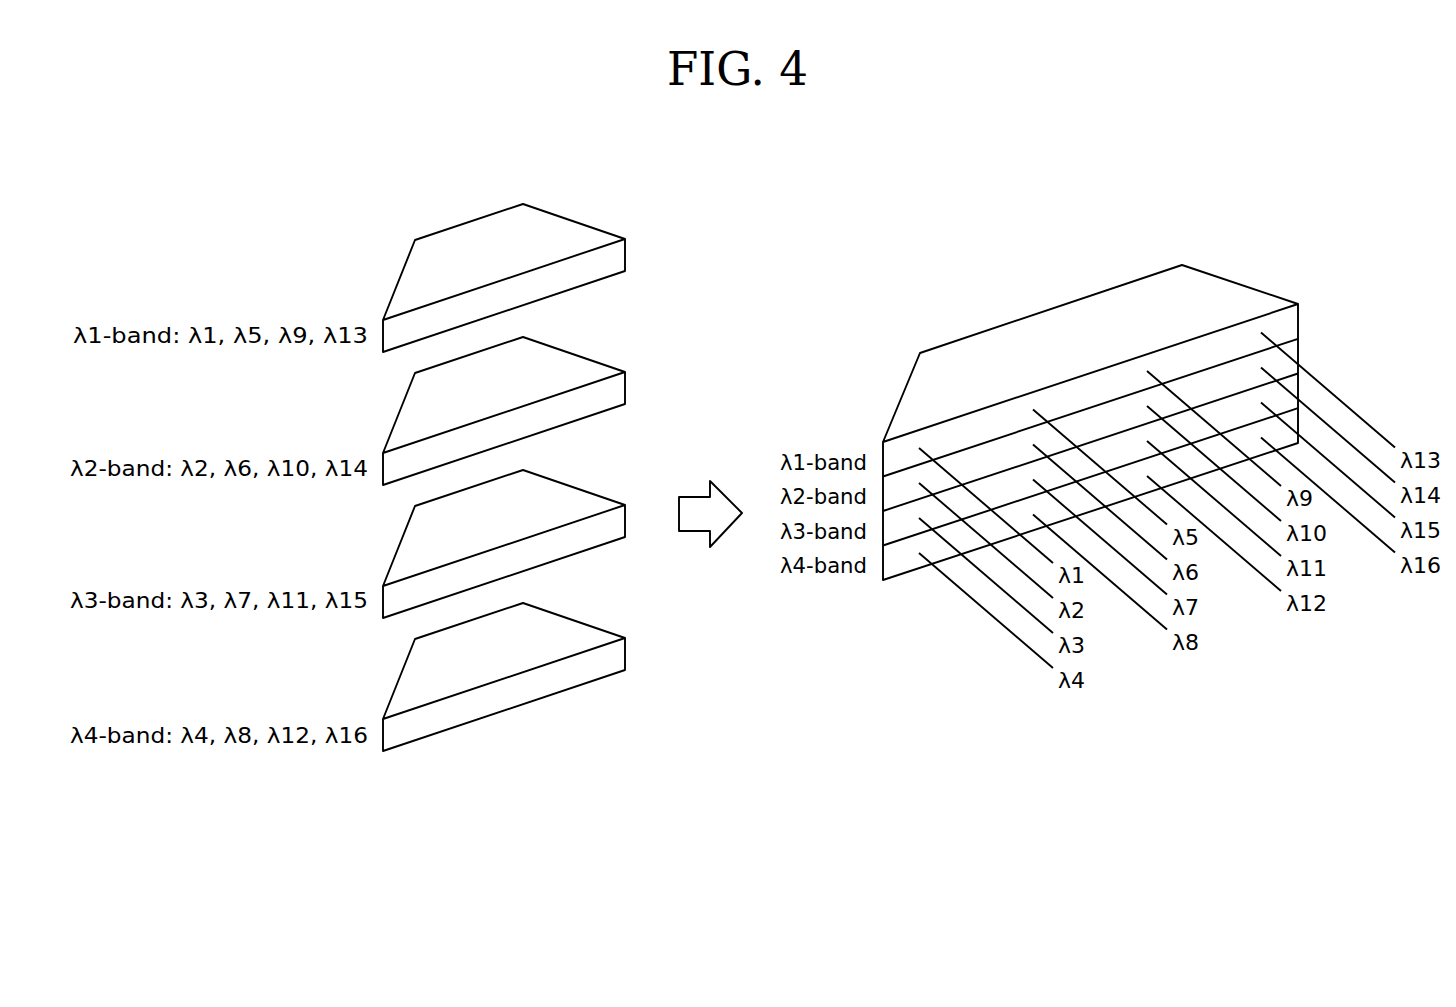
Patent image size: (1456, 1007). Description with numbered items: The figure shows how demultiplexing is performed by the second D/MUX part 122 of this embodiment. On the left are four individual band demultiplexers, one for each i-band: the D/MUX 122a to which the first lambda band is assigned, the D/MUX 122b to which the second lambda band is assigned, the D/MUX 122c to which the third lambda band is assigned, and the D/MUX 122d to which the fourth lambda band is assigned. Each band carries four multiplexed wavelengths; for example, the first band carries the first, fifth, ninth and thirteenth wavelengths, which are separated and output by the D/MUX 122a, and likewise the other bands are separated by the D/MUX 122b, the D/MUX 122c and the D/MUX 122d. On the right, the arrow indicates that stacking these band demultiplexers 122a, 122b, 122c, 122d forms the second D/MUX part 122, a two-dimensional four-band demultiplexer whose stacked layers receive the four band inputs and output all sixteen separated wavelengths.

The second D/MUX part 122 is at (1238, 284).
The D/MUX 122a is at (564, 228).
The D/MUX 122b is at (564, 361).
The D/MUX 122c is at (564, 494).
The D/MUX 122d is at (564, 627).